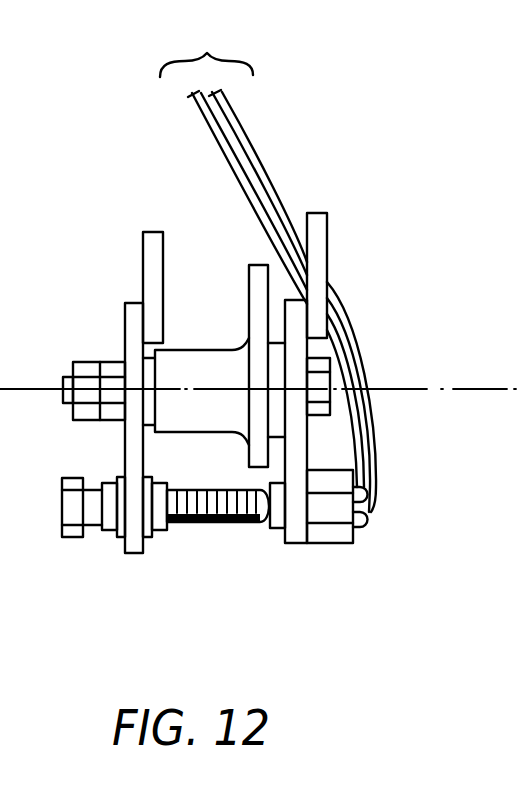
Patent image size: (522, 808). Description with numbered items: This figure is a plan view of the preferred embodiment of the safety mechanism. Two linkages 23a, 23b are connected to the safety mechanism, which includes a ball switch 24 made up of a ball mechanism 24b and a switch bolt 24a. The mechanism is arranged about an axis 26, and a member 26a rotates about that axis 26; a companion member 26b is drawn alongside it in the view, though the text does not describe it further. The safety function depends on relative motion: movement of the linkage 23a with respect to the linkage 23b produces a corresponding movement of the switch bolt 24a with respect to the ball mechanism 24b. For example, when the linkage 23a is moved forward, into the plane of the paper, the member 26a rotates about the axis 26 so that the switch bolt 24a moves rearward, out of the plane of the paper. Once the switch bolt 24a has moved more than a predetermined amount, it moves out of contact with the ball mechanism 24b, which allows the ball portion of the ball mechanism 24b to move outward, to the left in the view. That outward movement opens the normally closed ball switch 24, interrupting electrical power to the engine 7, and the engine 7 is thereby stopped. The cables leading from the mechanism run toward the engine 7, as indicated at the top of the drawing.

The engine 7 is at (237, 262).
The linkage 23a is at (143, 247).
The linkage 23b is at (327, 240).
The ball switch 24 is at (338, 478).
The switch bolt 24a is at (195, 523).
The ball mechanism 24b is at (280, 530).
The axis 26 is at (475, 381).
The member 26a is at (125, 457).
The side plate 26b is at (307, 443).